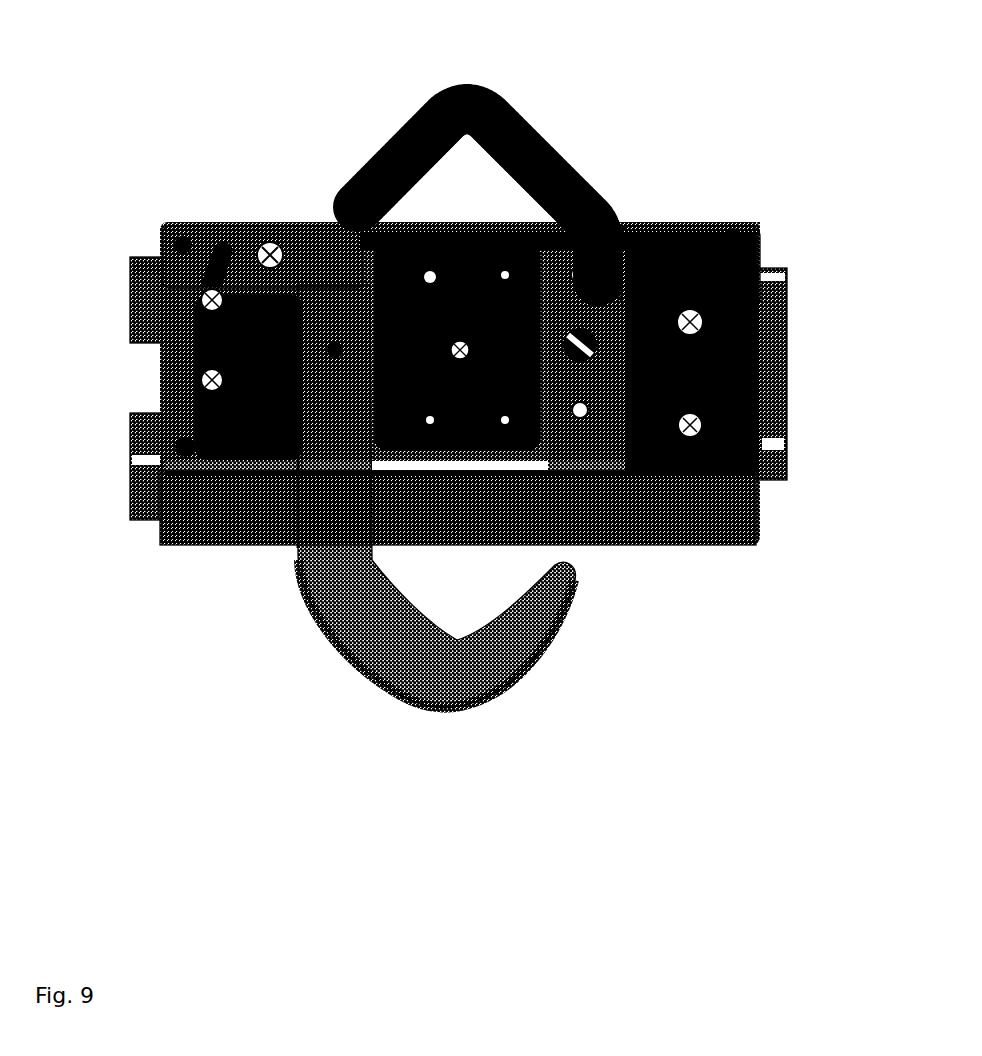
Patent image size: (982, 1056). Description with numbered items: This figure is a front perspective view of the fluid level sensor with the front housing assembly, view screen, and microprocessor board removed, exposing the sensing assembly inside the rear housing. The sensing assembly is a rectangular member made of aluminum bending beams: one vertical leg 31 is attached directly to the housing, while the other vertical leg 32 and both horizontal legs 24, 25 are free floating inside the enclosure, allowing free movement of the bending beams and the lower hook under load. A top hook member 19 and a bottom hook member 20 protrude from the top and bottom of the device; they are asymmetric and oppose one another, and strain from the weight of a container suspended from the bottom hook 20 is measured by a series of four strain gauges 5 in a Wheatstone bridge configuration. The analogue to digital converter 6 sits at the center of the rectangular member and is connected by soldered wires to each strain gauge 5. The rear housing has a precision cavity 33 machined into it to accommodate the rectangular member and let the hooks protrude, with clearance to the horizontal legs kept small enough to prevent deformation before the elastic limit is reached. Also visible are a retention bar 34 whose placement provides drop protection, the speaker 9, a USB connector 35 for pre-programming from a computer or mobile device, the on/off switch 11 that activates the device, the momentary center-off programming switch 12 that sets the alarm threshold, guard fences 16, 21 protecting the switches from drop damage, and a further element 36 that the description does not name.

The strain gauge 5 is at (384, 238).
The analogue to digital converter 6 is at (362, 230).
The speaker 9 is at (735, 237).
The on/off switch 11 is at (737, 400).
The momentary center-off programming switch 12 is at (165, 378).
The guard fence 16 is at (772, 290).
The top hook member 19 is at (497, 100).
The bottom hook member 20 is at (470, 697).
The guard fence 21 is at (133, 273).
The horizontal leg 24 is at (546, 228).
The horizontal leg 25 is at (520, 450).
The vertical leg 31 is at (603, 303).
The vertical leg 32 is at (318, 440).
The precision cavity 33 is at (553, 402).
The retention bar 34 is at (262, 250).
The USB connector 35 is at (210, 452).
The screw 36 is at (688, 330).